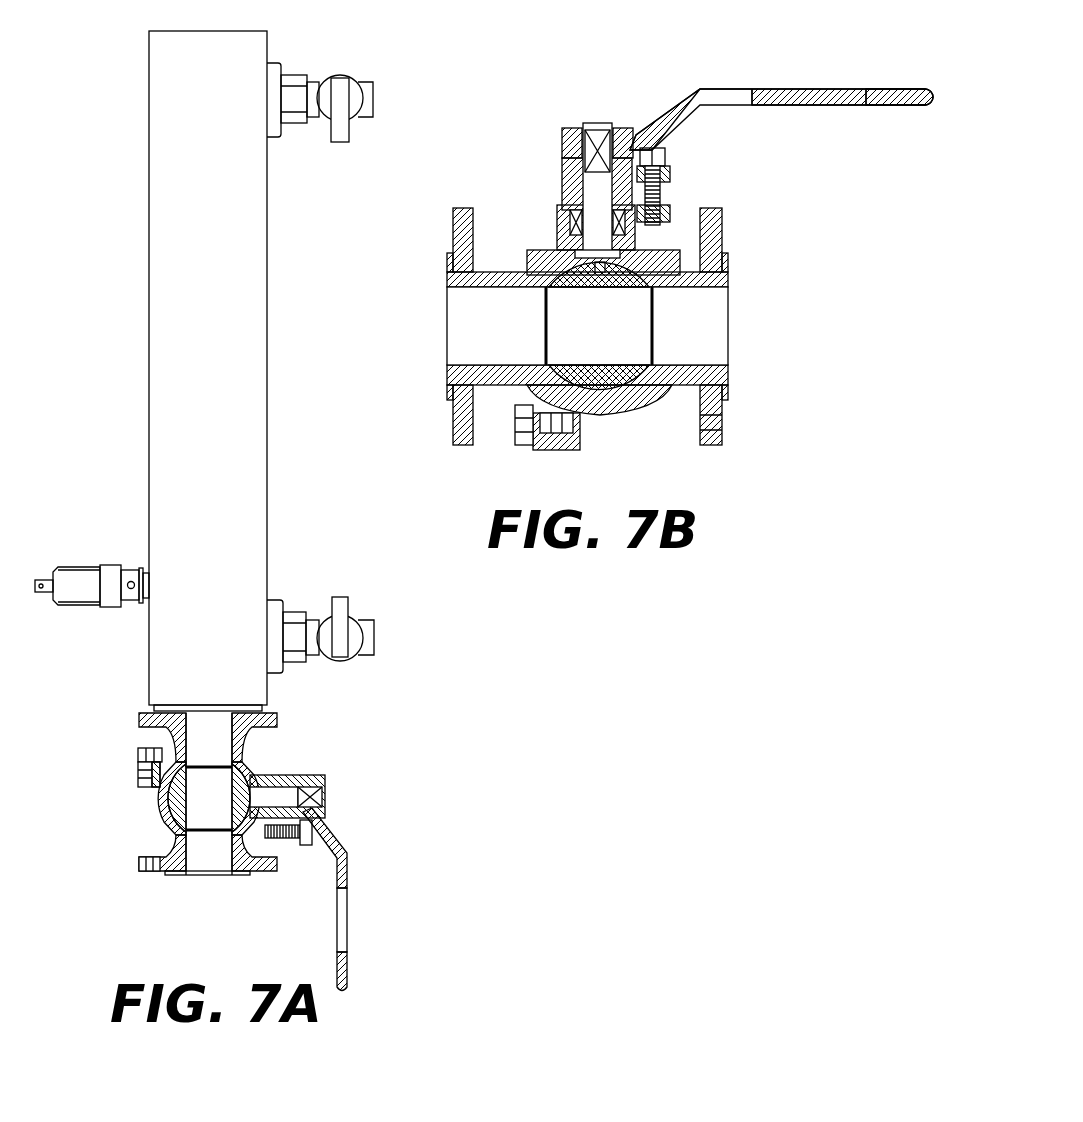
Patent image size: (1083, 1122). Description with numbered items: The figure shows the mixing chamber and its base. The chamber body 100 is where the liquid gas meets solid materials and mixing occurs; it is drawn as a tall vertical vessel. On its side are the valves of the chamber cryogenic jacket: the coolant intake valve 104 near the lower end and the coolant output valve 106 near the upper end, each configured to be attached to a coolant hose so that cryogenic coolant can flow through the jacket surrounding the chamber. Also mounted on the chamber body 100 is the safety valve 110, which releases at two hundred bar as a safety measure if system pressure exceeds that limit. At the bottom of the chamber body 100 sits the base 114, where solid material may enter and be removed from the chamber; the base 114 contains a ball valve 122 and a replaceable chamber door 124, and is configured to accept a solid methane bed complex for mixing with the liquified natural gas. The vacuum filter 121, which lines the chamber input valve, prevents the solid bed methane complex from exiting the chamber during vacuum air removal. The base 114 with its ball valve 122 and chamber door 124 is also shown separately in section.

In FIG. 7A, the chamber body 100 is at (180, 290).
In FIG. 7A, the chamber cryogenic jacket coolant intake valve 104 is at (374, 637).
In FIG. 7A, the chamber jacket coolant output valve 106 is at (374, 98).
In FIG. 7A, the safety valve 110 is at (80, 567).
In FIG. 7B, the base 114 is at (690, 269).
In FIG. 7A, the vacuum filter 121 is at (153, 709).
In FIG. 7A, the ball valve 122 is at (203, 803).
In FIG. 7B, the ball valve 122 is at (588, 330).
In FIG. 7B, the replaceable chamber door 124 is at (730, 333).